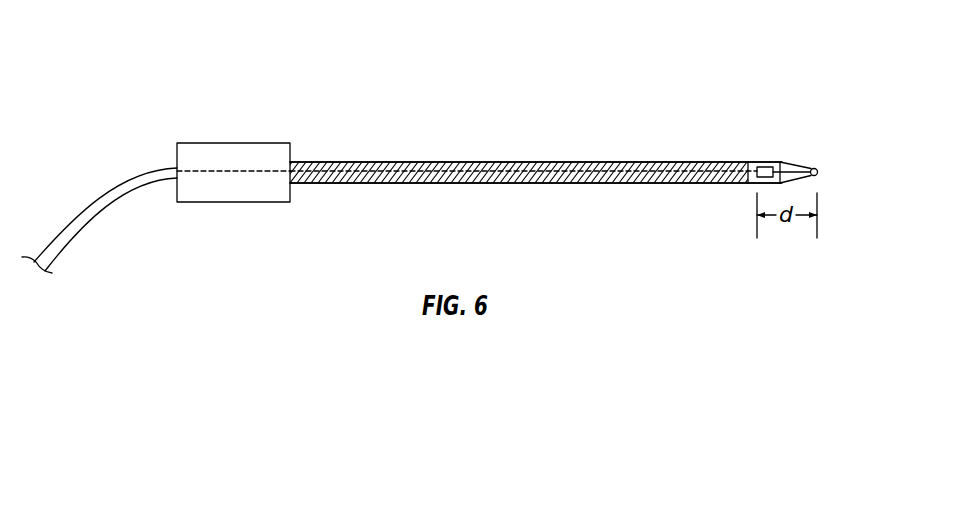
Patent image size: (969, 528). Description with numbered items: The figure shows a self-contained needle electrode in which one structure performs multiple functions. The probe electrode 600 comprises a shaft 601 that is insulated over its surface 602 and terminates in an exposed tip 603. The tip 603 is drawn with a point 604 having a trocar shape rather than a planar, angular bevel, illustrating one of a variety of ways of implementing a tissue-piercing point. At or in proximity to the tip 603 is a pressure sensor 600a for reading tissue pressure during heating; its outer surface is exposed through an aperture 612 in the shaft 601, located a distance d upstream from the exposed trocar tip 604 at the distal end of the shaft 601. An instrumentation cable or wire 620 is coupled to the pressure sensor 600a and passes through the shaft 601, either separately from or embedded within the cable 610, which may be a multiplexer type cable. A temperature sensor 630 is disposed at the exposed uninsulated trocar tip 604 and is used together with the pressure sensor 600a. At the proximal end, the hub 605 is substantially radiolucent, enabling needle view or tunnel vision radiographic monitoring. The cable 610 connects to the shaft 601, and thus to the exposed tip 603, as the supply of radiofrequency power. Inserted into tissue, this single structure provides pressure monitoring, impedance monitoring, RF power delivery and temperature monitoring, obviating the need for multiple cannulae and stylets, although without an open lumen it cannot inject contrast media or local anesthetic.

The probe electrode 600 is at (226, 64).
The cable 610 is at (120, 180).
The hub 605 is at (210, 143).
The shaft 601 is at (390, 162).
The insulated surface 602 is at (525, 165).
The instrumentation cable or wire 620 is at (402, 173).
The aperture 612 is at (760, 167).
The pressure sensor 600a is at (762, 178).
The exposed tip 603 is at (768, 162).
The point 604 is at (802, 162).
The temperature sensor 630 is at (818, 172).